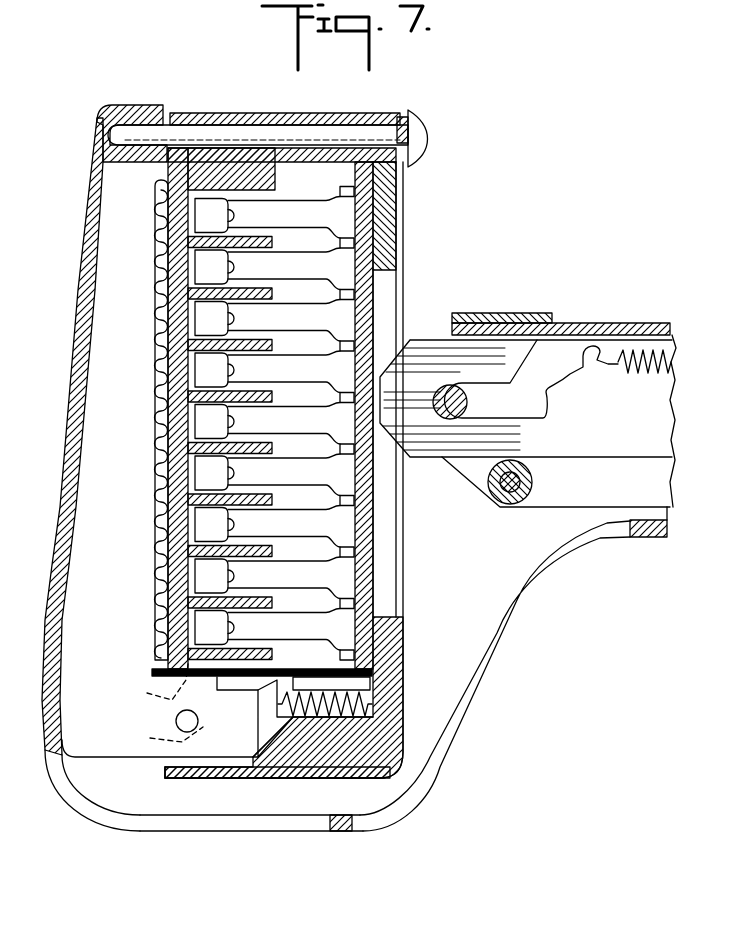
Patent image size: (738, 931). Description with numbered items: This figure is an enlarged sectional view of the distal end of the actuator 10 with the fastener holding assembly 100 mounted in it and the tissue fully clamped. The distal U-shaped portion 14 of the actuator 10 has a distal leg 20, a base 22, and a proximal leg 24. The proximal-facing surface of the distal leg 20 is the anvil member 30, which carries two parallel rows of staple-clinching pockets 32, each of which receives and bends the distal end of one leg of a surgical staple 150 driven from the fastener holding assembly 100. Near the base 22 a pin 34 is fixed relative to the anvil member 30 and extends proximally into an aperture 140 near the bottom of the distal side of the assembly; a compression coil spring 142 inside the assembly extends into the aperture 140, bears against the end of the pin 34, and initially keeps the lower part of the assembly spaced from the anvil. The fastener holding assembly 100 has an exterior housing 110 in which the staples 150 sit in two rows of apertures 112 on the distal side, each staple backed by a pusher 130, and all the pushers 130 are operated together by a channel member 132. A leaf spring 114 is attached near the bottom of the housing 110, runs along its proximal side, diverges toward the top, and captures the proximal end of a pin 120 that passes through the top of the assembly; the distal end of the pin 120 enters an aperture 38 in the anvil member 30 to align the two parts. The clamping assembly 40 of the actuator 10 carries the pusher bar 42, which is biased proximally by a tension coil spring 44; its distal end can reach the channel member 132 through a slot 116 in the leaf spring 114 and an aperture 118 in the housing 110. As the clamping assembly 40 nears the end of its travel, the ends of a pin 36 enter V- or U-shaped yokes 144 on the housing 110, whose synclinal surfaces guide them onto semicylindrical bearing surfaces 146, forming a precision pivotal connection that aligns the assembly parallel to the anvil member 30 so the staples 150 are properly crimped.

The actuator 10 is at (624, 572).
The distal U-shaped portion 14 is at (75, 783).
The distal leg 20 is at (70, 424).
The base 22 is at (233, 830).
The proximal leg 24 is at (510, 657).
The anvil member 30 is at (158, 210).
The staple-clinching pockets 32 is at (167, 447).
The pin 34 is at (208, 745).
The pin 36 is at (175, 719).
The aperture 38 is at (98, 124).
The clamping assembly 40 is at (606, 322).
The pusher bar 42 is at (592, 446).
The tension coil spring 44 is at (668, 356).
The fastener holding assembly 100 is at (297, 412).
The exterior housing 110 is at (257, 777).
The apertures 112 is at (200, 368).
The leaf spring 114 is at (405, 630).
The slot 116 is at (404, 528).
The aperture 118 is at (386, 554).
The pin 120 is at (354, 136).
The pusher 130 is at (282, 300).
The channel member 132 is at (368, 292).
The aperture 140 is at (166, 768).
The compression coil spring 142 is at (372, 702).
The yokes 144 is at (155, 707).
The bearing surfaces 146 is at (200, 743).
The surgical staples 150 is at (238, 371).